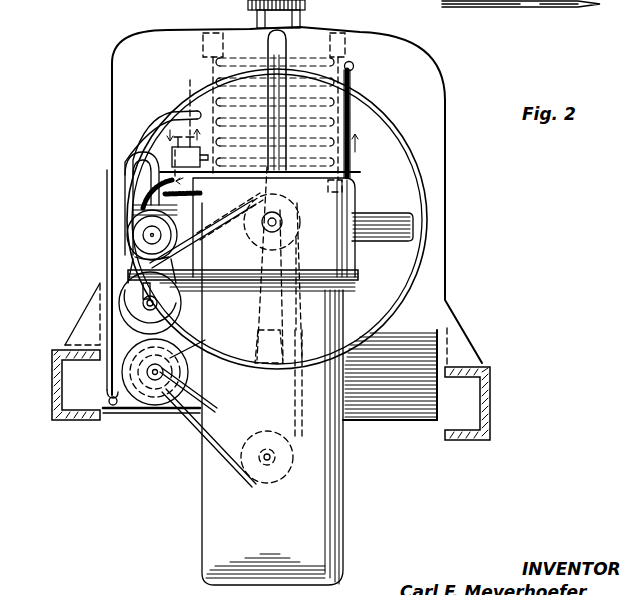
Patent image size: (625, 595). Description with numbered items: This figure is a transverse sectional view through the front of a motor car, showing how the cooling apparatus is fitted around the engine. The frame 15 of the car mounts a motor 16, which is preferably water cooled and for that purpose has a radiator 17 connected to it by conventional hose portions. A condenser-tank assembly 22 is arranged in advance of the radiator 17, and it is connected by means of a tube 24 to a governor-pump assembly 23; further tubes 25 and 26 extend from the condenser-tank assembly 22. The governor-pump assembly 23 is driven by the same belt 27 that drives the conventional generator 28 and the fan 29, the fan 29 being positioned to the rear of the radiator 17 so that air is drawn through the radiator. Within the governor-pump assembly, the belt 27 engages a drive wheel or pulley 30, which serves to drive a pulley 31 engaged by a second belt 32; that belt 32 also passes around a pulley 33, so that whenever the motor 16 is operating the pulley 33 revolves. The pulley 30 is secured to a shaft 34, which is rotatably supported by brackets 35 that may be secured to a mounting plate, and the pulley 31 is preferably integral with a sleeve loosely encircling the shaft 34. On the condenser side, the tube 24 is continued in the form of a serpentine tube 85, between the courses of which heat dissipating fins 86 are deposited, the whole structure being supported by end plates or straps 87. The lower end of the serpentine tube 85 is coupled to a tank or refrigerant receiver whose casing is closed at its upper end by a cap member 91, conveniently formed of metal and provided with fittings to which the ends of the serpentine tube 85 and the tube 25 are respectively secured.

The frame 15 is at (53, 383).
The motor 16 is at (272, 394).
The radiator 17 is at (440, 110).
The condenser-tank assembly 22 is at (340, 104).
The governor-pump assembly 23 is at (125, 269).
The tube 24 is at (262, 200).
The tube 25 is at (160, 123).
The tube 26 is at (190, 93).
The belt 27 is at (190, 430).
The generator 28 is at (133, 412).
The fan 29 is at (402, 213).
The drive wheel or pulley 30 is at (133, 317).
The pulley 31 is at (143, 302).
The belt 32 is at (140, 278).
The pulley 33 is at (144, 232).
The shaft 34 is at (145, 305).
The brackets 35 is at (137, 297).
The serpentine tube 85 is at (353, 78).
The heat dissipating fins 86 is at (157, 224).
The end plates or straps 87 is at (352, 170).
The cap member 91 is at (170, 151).